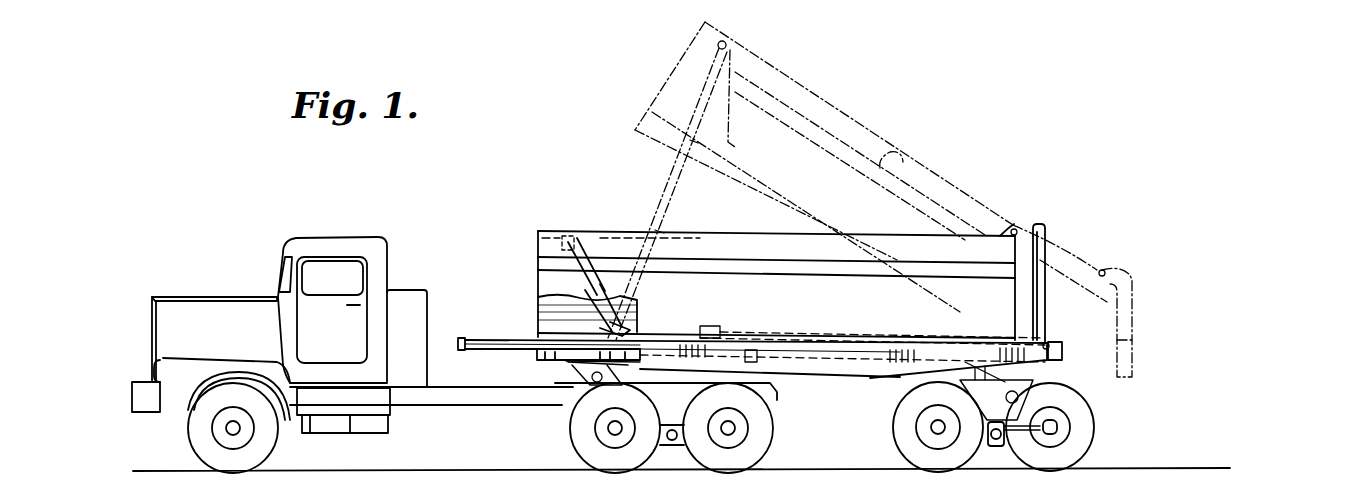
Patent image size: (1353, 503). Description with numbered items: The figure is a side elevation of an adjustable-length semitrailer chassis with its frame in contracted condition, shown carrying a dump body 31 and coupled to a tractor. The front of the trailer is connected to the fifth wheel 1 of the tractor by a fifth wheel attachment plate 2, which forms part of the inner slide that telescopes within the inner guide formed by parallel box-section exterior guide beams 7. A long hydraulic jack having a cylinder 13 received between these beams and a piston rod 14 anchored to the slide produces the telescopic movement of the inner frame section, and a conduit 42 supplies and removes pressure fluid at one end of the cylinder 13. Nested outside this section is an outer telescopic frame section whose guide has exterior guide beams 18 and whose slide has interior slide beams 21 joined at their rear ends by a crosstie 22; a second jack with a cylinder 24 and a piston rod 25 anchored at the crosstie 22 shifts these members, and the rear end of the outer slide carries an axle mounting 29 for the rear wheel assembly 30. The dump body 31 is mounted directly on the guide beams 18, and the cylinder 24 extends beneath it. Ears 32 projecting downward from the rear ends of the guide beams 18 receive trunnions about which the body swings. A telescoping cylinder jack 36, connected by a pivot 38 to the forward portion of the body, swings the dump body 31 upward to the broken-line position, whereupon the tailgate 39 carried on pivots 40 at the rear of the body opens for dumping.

The fifth wheel 1 is at (573, 393).
The fifth wheel attachment plate 2 is at (568, 383).
The exterior guide beams 7 is at (458, 403).
The cylinder 13 is at (484, 337).
The piston rod 14 is at (807, 367).
The exterior guide beams 18 is at (842, 372).
The interior slide beams 21 is at (1118, 362).
The crosstie 22 is at (1063, 347).
The cylinder 24 is at (822, 333).
The piston rod 25 is at (1040, 342).
The axle mounting 29 is at (980, 393).
The rear wheel assembly 30 is at (913, 452).
The dump body 31 is at (548, 282).
The ears 32 is at (1060, 397).
The telescoping cylinder jack 36 is at (660, 210).
The pivot 38 is at (565, 237).
The tailgate 39 is at (1040, 270).
The pivots 40 is at (1014, 230).
The conduit 42 is at (456, 340).